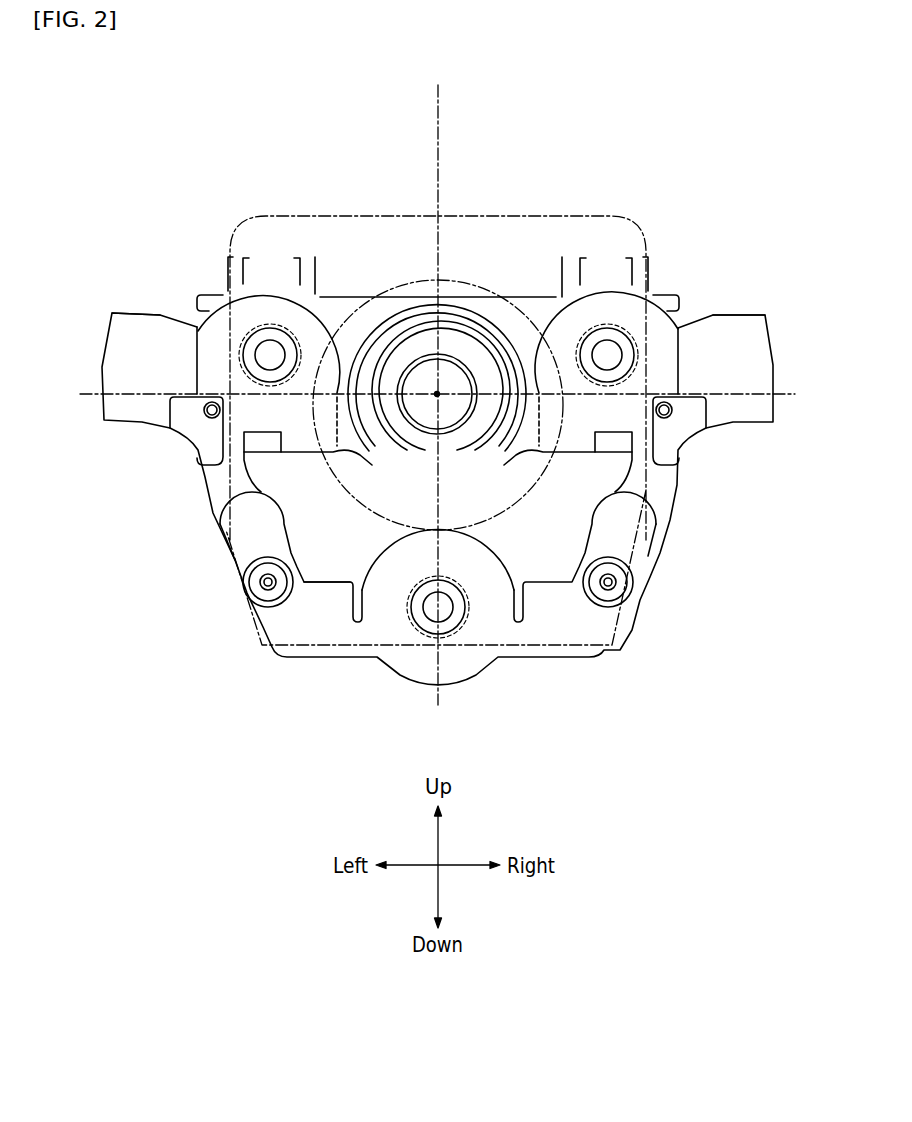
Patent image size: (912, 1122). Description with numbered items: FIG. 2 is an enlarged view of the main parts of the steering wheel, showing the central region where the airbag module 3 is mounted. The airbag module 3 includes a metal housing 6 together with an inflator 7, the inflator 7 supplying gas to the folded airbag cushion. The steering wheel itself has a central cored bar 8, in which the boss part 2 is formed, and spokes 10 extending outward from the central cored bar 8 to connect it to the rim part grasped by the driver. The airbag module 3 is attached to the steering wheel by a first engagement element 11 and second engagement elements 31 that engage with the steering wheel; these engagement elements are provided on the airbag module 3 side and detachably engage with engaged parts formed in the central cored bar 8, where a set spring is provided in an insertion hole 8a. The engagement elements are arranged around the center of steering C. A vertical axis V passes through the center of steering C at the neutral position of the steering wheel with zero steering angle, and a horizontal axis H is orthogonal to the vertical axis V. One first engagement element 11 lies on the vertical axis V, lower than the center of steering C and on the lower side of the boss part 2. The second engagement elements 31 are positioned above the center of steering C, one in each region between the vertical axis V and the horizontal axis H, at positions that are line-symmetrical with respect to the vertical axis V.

The boss part 2 is at (450, 340).
The airbag module 3 is at (436, 360).
The housing 6 is at (620, 216).
The inflator 7 is at (490, 286).
The central cored bar 8 is at (212, 577).
The insertion hole 8a is at (287, 347).
The spokes 10 is at (140, 325).
The first engagement element 11 is at (484, 607).
The second engagement element 31 is at (270, 314).
The center of steering C is at (437, 394).
The vertical axis V is at (440, 107).
The horizontal axis H is at (752, 398).